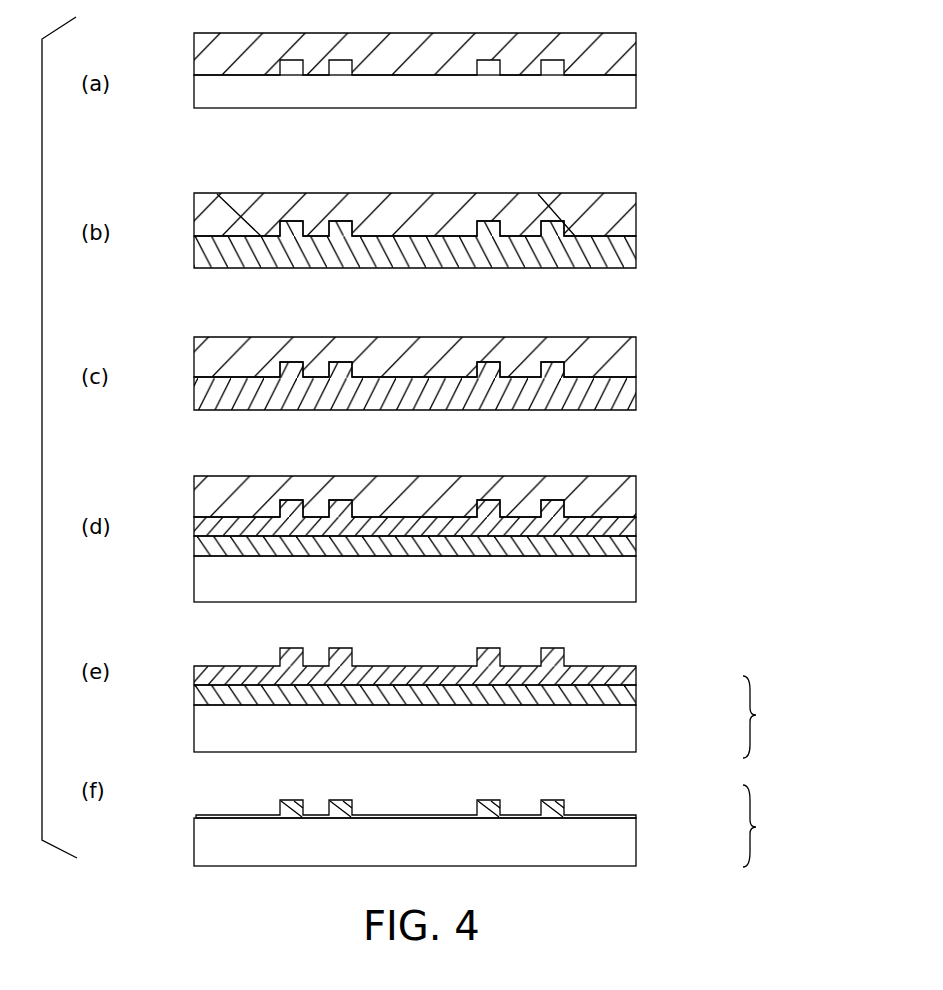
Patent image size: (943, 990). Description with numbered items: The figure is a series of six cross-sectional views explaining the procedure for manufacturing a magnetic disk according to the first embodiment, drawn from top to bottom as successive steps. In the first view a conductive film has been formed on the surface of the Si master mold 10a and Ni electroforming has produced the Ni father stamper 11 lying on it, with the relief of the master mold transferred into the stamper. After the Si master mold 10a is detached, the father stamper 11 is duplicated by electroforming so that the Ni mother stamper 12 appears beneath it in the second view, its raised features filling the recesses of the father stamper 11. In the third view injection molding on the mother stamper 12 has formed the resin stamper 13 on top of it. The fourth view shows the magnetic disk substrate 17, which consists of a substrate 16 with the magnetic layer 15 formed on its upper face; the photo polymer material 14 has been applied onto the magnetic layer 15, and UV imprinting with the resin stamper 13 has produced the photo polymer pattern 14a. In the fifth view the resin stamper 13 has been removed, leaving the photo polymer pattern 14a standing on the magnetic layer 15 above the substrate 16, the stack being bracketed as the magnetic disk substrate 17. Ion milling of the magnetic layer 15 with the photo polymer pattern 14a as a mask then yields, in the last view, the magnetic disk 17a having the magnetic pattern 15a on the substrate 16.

The Si master mold 10a is at (620, 83).
The Ni father stamper 11 is at (633, 45).
The Ni mother stamper 12 is at (627, 240).
The resin stamper 13 is at (620, 362).
The photo polymer material 14 is at (633, 520).
The photo polymer pattern 14a is at (630, 662).
The magnetic layer 15 is at (640, 545).
The magnetic pattern 15a is at (620, 810).
The substrate 16 is at (620, 577).
The magnetic disk substrate 17 is at (766, 717).
The magnetic disk 17a is at (773, 826).